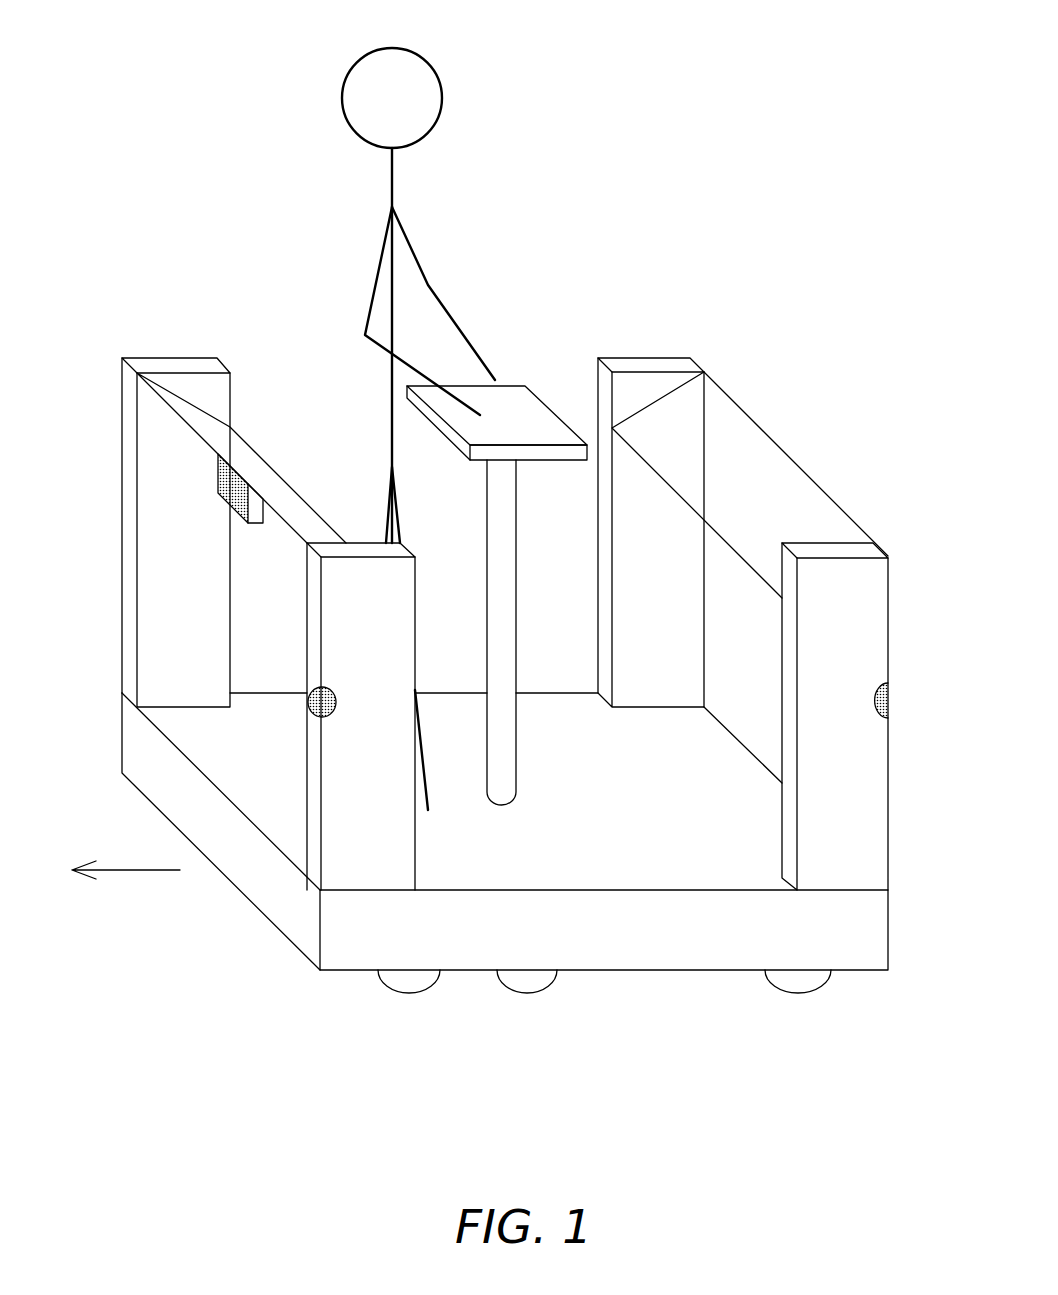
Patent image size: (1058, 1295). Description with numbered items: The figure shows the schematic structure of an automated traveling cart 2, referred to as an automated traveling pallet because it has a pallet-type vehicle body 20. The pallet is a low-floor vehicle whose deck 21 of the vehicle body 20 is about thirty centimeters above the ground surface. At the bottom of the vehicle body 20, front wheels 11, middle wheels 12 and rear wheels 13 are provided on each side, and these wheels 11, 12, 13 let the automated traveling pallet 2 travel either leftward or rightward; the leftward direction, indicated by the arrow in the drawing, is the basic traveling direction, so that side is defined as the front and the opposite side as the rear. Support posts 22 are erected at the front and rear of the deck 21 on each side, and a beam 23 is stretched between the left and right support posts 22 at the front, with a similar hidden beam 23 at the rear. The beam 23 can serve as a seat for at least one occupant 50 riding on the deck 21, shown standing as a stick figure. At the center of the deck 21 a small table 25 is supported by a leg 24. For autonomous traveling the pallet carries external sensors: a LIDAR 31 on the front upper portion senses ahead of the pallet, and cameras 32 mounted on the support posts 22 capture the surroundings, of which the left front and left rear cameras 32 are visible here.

The automated traveling cart 2 is at (210, 325).
The front wheels 11 is at (405, 993).
The middle wheels 12 is at (522, 993).
The rear wheels 13 is at (800, 993).
The vehicle body 20 is at (265, 893).
The deck 21 is at (218, 748).
The support posts 22 is at (122, 603).
The beam 23 is at (277, 470).
The leg 24 is at (520, 520).
The small table 25 is at (503, 407).
The LIDAR 31 is at (218, 468).
The cameras 32 is at (312, 683).
The occupant 50 is at (352, 72).